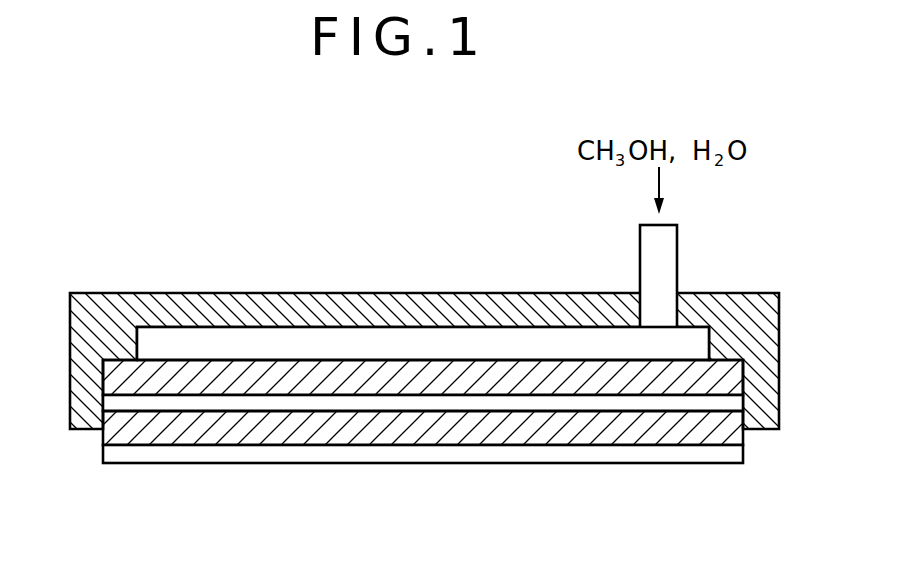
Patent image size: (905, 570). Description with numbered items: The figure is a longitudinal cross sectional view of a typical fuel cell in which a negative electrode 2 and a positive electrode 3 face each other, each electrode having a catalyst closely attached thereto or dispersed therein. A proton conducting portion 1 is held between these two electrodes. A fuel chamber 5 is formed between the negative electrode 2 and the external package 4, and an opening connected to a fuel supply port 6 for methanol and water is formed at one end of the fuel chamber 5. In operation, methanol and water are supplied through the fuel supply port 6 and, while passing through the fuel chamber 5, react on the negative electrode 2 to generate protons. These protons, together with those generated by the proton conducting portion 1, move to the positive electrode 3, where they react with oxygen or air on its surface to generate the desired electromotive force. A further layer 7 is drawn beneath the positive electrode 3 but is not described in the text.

The proton conducting portion 1 is at (323, 400).
The negative electrode 2 is at (327, 372).
The positive electrode 3 is at (452, 423).
The external package 4 is at (110, 325).
The fuel chamber 5 is at (207, 338).
The fuel supply port 6 is at (658, 250).
The air diffusion layer / current collector 7 is at (153, 455).